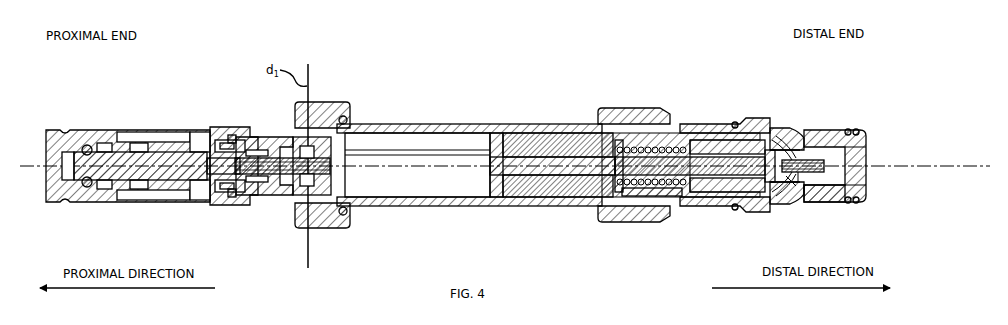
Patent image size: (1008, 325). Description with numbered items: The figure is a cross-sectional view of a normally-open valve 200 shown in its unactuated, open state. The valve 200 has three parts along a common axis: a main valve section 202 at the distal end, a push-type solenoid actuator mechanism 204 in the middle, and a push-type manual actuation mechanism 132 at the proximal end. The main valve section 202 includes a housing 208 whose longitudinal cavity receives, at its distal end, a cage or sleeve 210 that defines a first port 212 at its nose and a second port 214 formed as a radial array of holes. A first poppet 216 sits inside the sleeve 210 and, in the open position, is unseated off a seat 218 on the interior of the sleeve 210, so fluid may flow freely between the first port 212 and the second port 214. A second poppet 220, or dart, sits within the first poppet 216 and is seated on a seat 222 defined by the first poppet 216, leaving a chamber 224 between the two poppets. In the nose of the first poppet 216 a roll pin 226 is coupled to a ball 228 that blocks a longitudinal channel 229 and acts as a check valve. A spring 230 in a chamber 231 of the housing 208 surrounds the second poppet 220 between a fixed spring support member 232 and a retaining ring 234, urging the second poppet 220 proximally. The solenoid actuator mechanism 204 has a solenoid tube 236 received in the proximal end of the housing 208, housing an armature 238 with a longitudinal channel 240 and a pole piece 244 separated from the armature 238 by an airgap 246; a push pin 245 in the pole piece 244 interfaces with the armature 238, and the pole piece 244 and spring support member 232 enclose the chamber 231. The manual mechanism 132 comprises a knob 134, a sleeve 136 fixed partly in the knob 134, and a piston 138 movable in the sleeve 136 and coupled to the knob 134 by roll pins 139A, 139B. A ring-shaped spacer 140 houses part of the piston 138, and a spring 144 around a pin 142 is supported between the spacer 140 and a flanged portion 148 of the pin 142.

The valve 200 is at (50, 112).
The knob 134 is at (55, 138).
The piston 138 is at (171, 176).
The roll pin 139A is at (86, 146).
The roll pin 139B is at (87, 187).
The push-type manual actuation mechanism 132 is at (216, 92).
The sleeve 136 is at (226, 130).
The flanged portion 148 is at (233, 198).
The spring 144 is at (266, 195).
The pin 142 is at (305, 176).
The spacer 140 is at (322, 130).
The push-type solenoid actuator mechanism 204 is at (421, 100).
The solenoid tube 236 is at (480, 124).
The armature 238 is at (385, 141).
The longitudinal channel 240 is at (447, 150).
The airgap 246 is at (496, 200).
The pole piece 244 is at (535, 140).
The push pin 245 is at (525, 190).
The housing 208 is at (620, 115).
The retaining ring 234 is at (636, 148).
The spring 230 is at (668, 157).
The spring support member 232 is at (705, 127).
The main valve section 202 is at (748, 108).
The second port 214 is at (786, 124).
The longitudinal channel 229 is at (780, 160).
The ball 228 is at (810, 162).
The sleeve 210 is at (867, 135).
The roll pin 226 is at (852, 130).
The first port 212 is at (868, 176).
The seat 218 is at (812, 190).
The seat 222 is at (786, 178).
The first poppet 216 is at (790, 192).
The chamber 224 is at (763, 186).
The second poppet 220 is at (730, 206).
The chamber 231 is at (665, 196).